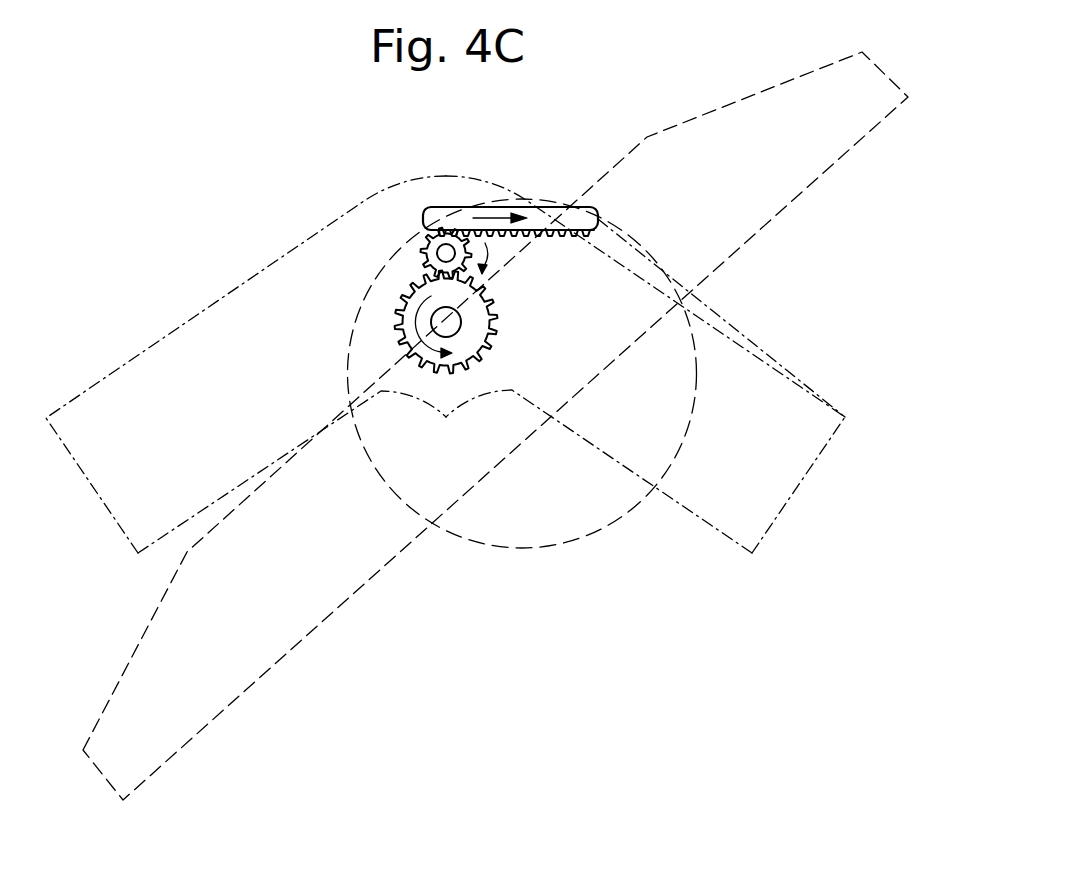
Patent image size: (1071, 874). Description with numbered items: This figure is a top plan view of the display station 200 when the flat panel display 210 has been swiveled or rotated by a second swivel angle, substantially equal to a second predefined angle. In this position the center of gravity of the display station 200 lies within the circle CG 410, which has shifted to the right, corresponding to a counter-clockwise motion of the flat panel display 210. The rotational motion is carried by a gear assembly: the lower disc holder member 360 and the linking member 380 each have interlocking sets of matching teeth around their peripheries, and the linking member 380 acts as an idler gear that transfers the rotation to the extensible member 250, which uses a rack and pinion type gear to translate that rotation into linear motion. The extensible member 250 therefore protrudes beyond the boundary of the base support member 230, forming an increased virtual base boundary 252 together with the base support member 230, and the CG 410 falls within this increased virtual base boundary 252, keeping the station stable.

The display station 200 is at (592, 112).
The flat panel display (FPD) 210 is at (140, 640).
The base support member 230 is at (208, 307).
The extensible member 250 is at (440, 207).
The virtual base boundary 252 is at (742, 334).
The lower disc holder member 360 is at (489, 337).
The linking member 380 is at (422, 257).
The circle CG 410 is at (562, 548).